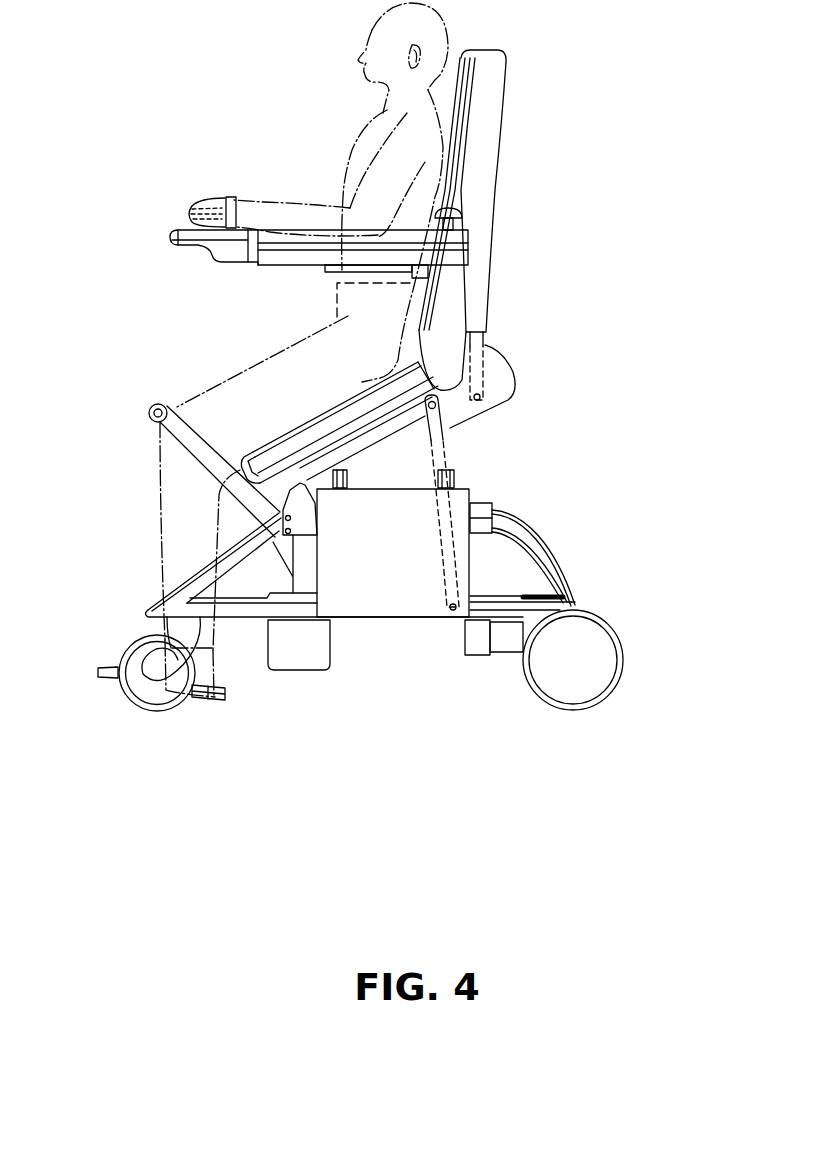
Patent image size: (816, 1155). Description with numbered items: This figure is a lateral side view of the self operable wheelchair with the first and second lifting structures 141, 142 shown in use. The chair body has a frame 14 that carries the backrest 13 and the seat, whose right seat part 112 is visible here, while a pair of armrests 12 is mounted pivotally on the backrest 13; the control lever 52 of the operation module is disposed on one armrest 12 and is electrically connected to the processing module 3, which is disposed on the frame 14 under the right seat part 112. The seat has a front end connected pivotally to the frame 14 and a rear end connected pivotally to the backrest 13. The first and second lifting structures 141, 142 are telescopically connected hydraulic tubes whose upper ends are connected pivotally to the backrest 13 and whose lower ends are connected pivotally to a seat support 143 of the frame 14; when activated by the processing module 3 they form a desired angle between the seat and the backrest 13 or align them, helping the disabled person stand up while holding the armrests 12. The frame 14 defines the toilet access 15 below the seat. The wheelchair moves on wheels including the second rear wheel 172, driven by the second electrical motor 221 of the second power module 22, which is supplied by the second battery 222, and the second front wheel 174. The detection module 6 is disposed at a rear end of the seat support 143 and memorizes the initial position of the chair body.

The processing module 3 is at (304, 663).
The detection module 6 is at (505, 393).
The armrest 12 is at (293, 258).
The backrest 13 is at (485, 128).
The frame 14 is at (257, 605).
The toilet access 15 is at (482, 577).
The second power module 22 is at (523, 752).
The control lever 52 is at (230, 197).
The right seat part 112 is at (290, 447).
The first lifting structure 141 is at (458, 462).
The second lifting structure 142 is at (484, 345).
The seat support 143 is at (465, 413).
The second rear wheel 172 is at (570, 682).
The second front wheel 174 is at (140, 692).
The second electrical motor 221 is at (507, 642).
The second battery 222 is at (405, 603).